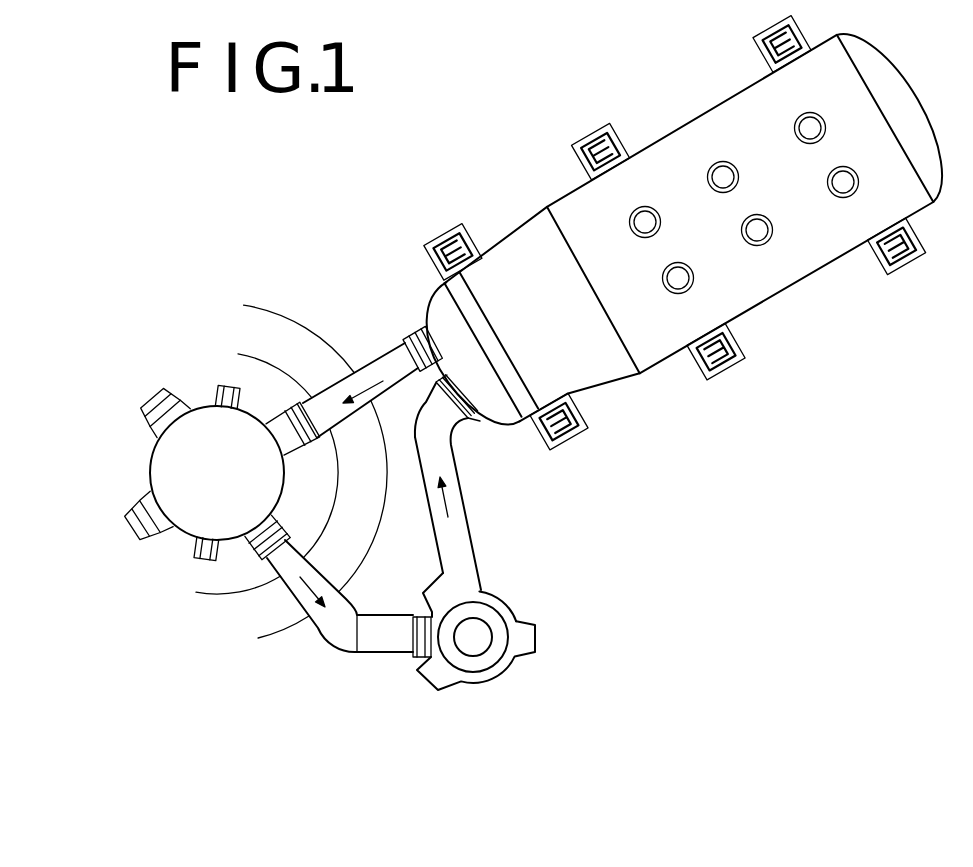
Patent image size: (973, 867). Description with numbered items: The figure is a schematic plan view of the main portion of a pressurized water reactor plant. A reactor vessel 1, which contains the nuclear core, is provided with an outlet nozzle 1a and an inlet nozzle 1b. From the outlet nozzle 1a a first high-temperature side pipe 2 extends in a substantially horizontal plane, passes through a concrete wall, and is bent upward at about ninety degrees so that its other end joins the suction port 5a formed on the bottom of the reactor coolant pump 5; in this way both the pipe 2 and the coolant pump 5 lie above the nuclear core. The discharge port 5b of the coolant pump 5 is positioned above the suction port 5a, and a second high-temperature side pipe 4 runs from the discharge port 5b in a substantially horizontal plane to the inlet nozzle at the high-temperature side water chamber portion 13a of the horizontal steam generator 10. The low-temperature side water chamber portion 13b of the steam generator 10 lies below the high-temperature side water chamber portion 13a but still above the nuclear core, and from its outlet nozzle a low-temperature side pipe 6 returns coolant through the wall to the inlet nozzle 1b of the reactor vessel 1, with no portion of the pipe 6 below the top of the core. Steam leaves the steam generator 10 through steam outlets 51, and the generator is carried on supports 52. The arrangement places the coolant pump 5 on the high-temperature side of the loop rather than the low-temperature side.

The reactor vessel 1 is at (200, 400).
The outlet nozzle 1a is at (243, 542).
The inlet nozzle 1b is at (263, 416).
The first high-temperature side pipe 2 is at (327, 640).
The second high-temperature side pipe 4 is at (458, 532).
The reactor coolant pump 5 is at (532, 613).
The suction port 5a is at (418, 655).
The discharge port 5b is at (487, 592).
The low-temperature side pipe 6 is at (393, 355).
The horizontal steam generator 10 is at (810, 285).
The high-temperature side water chamber portion 13a is at (497, 413).
The low-temperature side water chamber portion 13b is at (443, 310).
The steam outlets 51 is at (808, 112).
The support of steam generator 52 is at (760, 52).